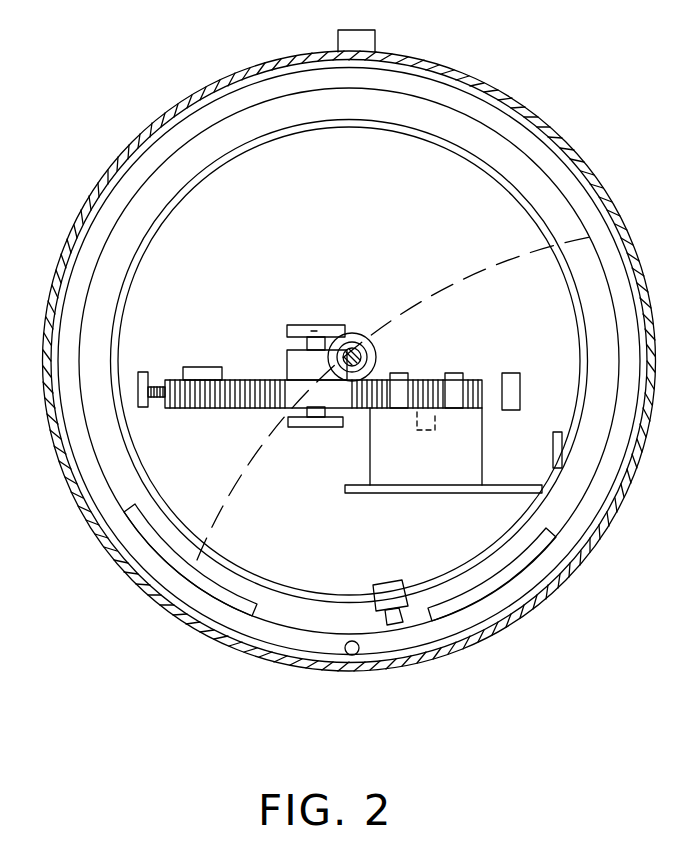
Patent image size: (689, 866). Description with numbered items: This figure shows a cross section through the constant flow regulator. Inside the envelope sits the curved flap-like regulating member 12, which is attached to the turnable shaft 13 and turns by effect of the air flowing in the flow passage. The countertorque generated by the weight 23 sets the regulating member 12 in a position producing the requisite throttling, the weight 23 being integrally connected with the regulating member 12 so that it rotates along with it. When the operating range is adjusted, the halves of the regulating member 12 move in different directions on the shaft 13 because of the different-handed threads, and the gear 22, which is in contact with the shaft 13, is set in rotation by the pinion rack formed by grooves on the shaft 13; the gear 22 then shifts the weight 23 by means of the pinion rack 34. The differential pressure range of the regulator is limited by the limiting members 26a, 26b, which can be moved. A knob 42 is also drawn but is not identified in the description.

The regulating member 12 is at (455, 290).
The shaft 13 is at (362, 342).
The pinion rack 34 is at (258, 373).
The adjusting knob 42 is at (150, 404).
The gear 22 is at (266, 408).
The weight 23 is at (473, 456).
The limiting member 26a is at (143, 533).
The limiting member 26b is at (540, 547).